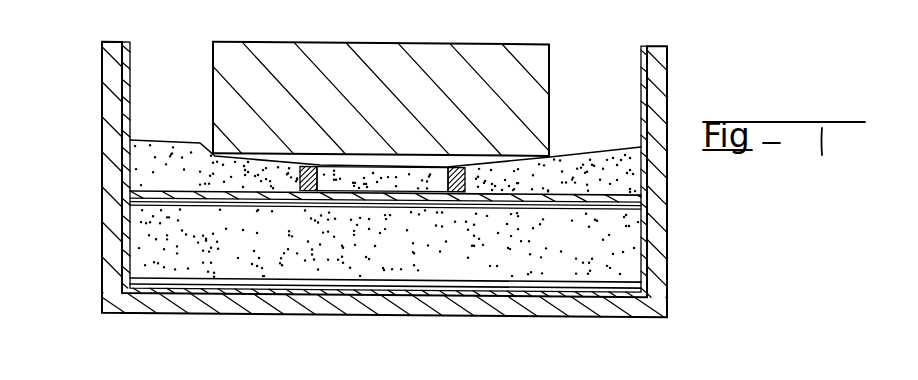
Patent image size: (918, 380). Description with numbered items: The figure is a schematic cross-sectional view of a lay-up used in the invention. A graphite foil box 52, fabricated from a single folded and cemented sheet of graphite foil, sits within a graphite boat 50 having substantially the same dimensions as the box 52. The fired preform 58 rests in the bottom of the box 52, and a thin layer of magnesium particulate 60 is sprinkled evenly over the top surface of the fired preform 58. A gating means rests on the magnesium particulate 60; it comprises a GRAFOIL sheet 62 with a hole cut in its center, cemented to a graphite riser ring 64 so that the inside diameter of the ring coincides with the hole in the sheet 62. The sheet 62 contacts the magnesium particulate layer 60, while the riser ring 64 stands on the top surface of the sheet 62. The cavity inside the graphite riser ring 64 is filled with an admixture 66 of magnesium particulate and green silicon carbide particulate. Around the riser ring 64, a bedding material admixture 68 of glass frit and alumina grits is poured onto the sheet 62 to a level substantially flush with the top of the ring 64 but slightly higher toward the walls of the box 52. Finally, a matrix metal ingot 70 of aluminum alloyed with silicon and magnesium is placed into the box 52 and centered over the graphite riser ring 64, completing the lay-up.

The graphite boat 50 is at (667, 75).
The graphite foil box 52 is at (128, 78).
The fired preform 58 is at (622, 250).
The magnesium particulate 60 is at (137, 199).
The GRAFOIL sheet 62 is at (635, 199).
The graphite riser ring 64 is at (638, 183).
The admixture 66 is at (432, 173).
The bedding material admixture 68 is at (573, 155).
The matrix metal ingot 70 is at (393, 80).